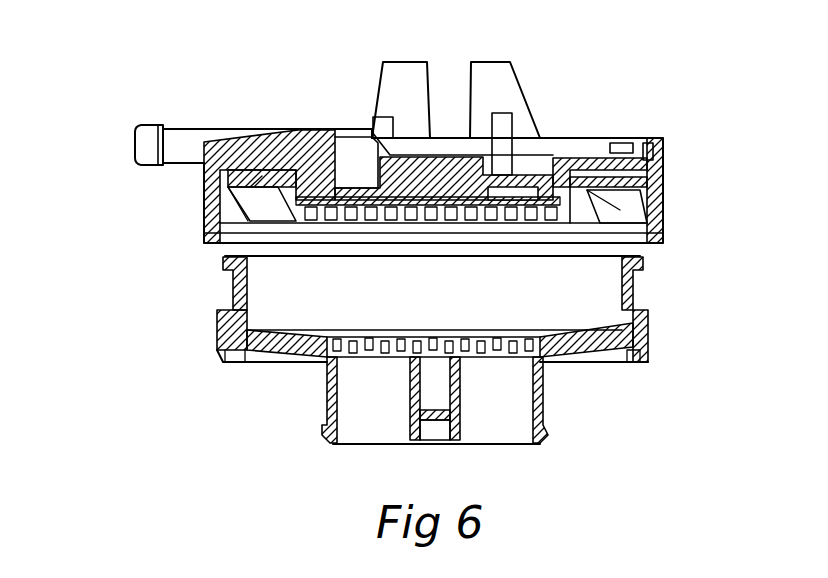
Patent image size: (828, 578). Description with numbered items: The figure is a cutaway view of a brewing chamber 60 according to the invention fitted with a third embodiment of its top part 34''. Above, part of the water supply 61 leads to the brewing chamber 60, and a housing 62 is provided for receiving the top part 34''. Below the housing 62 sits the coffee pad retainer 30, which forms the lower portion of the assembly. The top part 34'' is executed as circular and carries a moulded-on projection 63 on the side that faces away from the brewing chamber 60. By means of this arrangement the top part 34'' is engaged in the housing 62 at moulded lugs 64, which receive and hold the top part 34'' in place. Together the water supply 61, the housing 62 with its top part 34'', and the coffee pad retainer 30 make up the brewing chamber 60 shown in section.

The brewing chamber 60 is at (122, 267).
The water supply 61 is at (234, 132).
The housing 62 is at (657, 154).
The moulded-on projection 63 is at (298, 198).
The moulded lugs 64 is at (290, 214).
The top part 34'' is at (651, 235).
The coffee pad retainer 30 is at (643, 328).